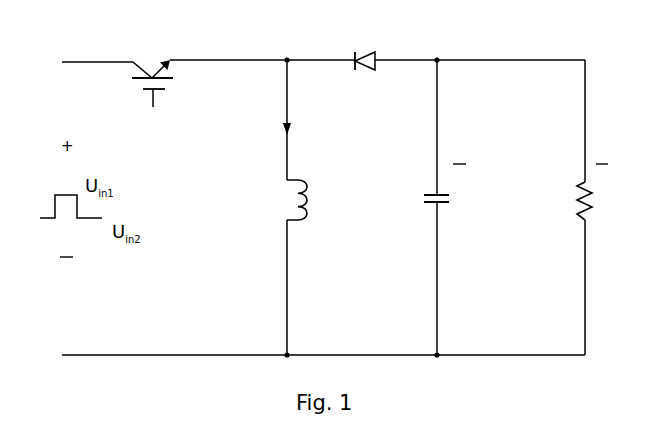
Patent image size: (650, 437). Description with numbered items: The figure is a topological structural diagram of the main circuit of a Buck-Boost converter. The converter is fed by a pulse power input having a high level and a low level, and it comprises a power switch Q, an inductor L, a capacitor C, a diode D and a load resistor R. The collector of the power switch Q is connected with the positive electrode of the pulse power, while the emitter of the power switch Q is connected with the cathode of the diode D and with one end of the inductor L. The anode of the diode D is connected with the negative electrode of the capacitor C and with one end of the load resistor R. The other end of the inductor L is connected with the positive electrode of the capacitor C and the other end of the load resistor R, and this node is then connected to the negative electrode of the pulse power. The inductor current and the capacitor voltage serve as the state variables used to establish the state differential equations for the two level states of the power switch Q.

The power switch Q is at (152, 70).
The diode D is at (365, 49).
The inductor L is at (278, 207).
The capacitor C is at (437, 207).
The load resistor R is at (575, 207).